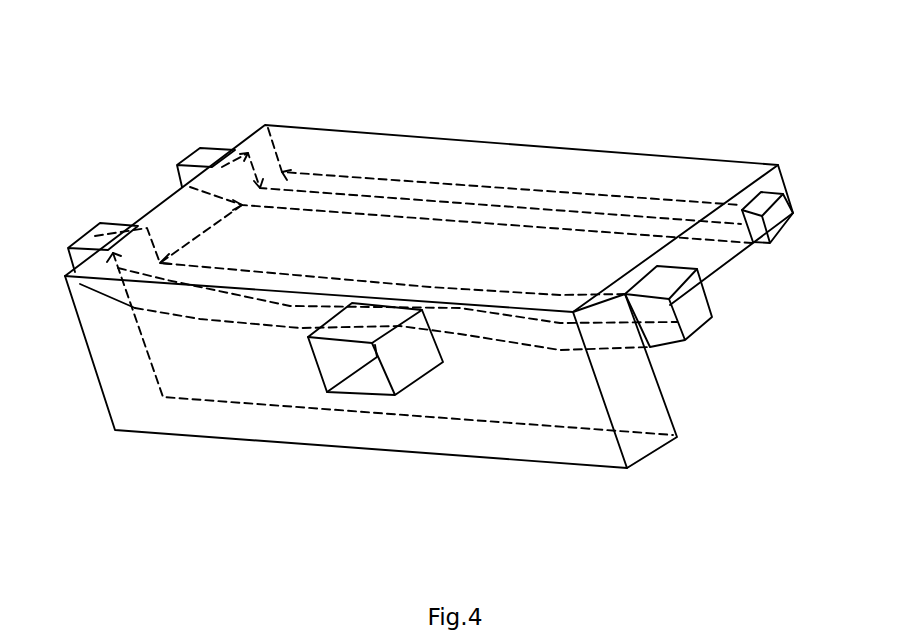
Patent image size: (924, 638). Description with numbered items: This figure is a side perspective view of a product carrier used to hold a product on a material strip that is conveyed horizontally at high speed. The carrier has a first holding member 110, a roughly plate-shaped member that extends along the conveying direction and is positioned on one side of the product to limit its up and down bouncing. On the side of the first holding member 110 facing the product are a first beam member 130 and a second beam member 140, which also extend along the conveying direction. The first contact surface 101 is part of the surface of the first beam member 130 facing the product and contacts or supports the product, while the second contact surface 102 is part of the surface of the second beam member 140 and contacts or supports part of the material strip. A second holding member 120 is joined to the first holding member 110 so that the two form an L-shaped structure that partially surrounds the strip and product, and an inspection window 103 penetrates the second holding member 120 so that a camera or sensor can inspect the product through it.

The first contact surface 101 is at (325, 203).
The second contact surface 102 is at (188, 310).
The inspection window 103 is at (373, 373).
The first holding member 110 is at (522, 145).
The second holding member 120 is at (512, 461).
The first beam member 130 is at (775, 216).
The second beam member 140 is at (688, 305).